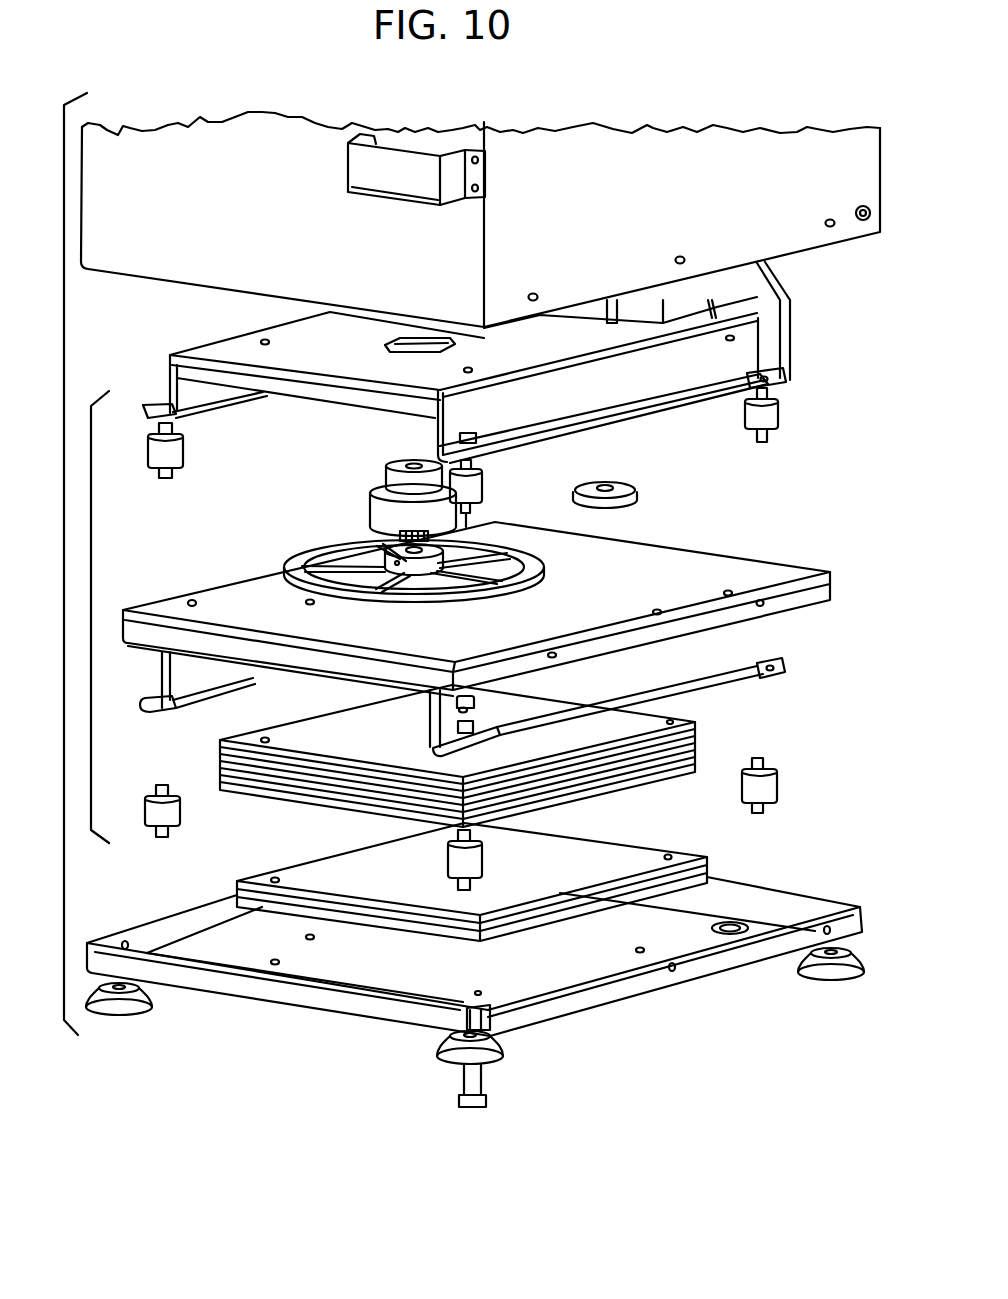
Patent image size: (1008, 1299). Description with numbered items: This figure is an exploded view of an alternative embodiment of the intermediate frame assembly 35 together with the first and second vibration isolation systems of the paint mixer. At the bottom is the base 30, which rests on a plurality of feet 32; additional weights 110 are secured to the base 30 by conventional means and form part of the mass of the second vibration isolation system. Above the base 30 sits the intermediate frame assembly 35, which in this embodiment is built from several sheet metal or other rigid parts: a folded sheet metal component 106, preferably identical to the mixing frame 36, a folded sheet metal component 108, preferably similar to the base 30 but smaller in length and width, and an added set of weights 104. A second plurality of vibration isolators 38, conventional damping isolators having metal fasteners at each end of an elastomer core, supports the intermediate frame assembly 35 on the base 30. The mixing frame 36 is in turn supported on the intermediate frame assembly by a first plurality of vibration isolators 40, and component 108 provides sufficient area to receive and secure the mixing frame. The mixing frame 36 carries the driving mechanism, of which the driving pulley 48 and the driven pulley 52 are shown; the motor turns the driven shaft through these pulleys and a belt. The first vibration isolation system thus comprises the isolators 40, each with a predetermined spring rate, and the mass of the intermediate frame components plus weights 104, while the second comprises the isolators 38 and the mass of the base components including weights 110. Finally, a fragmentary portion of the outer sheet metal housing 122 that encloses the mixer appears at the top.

The chassis housing 122 is at (197, 287).
The mixing frame 36 is at (345, 403).
The first plurality of vibration isolators 40 is at (185, 445).
The driving pulley 48 is at (634, 488).
The sheet metal folded component 108 is at (747, 556).
The sheet metal folded component 106 is at (758, 642).
The driven pulley 52 is at (533, 597).
The weights 104 is at (700, 731).
The intermediate frame assembly 35 is at (91, 737).
The second plurality of vibration isolators 38 is at (180, 808).
The additional weights 110 is at (712, 867).
The base 30 is at (623, 998).
The feet 32 is at (152, 1008).